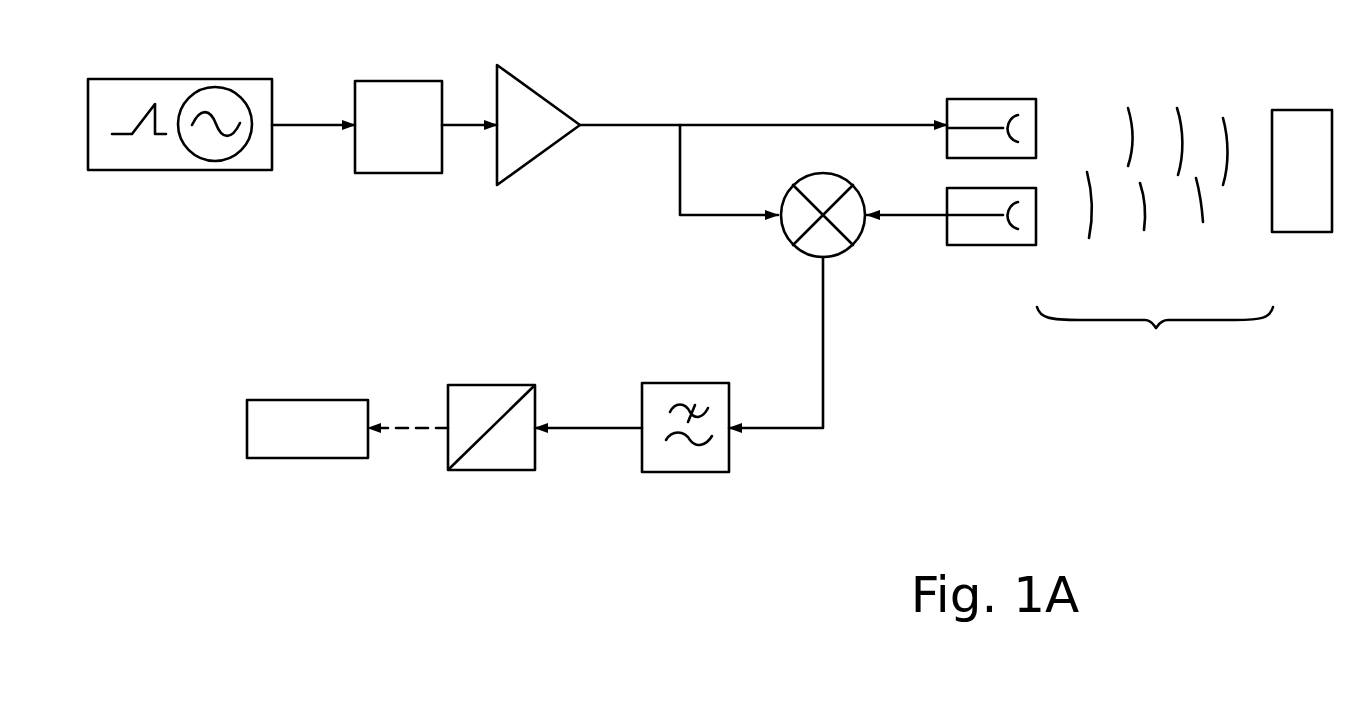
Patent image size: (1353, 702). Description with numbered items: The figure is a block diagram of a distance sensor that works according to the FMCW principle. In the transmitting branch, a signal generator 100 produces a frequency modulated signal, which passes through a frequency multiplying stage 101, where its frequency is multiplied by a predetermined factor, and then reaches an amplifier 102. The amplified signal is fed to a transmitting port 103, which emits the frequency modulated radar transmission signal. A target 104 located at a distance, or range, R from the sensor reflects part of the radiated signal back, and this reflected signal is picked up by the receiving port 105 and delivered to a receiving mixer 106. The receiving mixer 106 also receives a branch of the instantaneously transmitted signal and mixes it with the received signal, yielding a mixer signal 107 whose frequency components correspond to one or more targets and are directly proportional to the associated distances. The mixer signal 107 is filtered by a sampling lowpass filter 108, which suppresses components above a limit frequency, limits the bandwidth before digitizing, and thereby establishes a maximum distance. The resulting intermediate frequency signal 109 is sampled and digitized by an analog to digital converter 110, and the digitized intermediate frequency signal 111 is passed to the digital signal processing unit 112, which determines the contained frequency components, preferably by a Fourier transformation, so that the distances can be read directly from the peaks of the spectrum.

The signal generator 100 is at (131, 93).
The frequency multiplying stage 101 is at (410, 98).
The amplifier 102 is at (532, 105).
The transmitting port 103 is at (962, 107).
The target 104 is at (1293, 115).
The receiving port 105 is at (1010, 232).
The receiving mixer 106 is at (840, 243).
The mixer signal 107 is at (825, 375).
The sampling lowpass filter 108 is at (685, 470).
The intermediate frequency signal 109 is at (589, 426).
The analog to digital converter 110 is at (503, 458).
The digitized intermediate frequency signal 111 is at (407, 421).
The digital signal processing unit 112 is at (290, 452).
The range R is at (1155, 236).